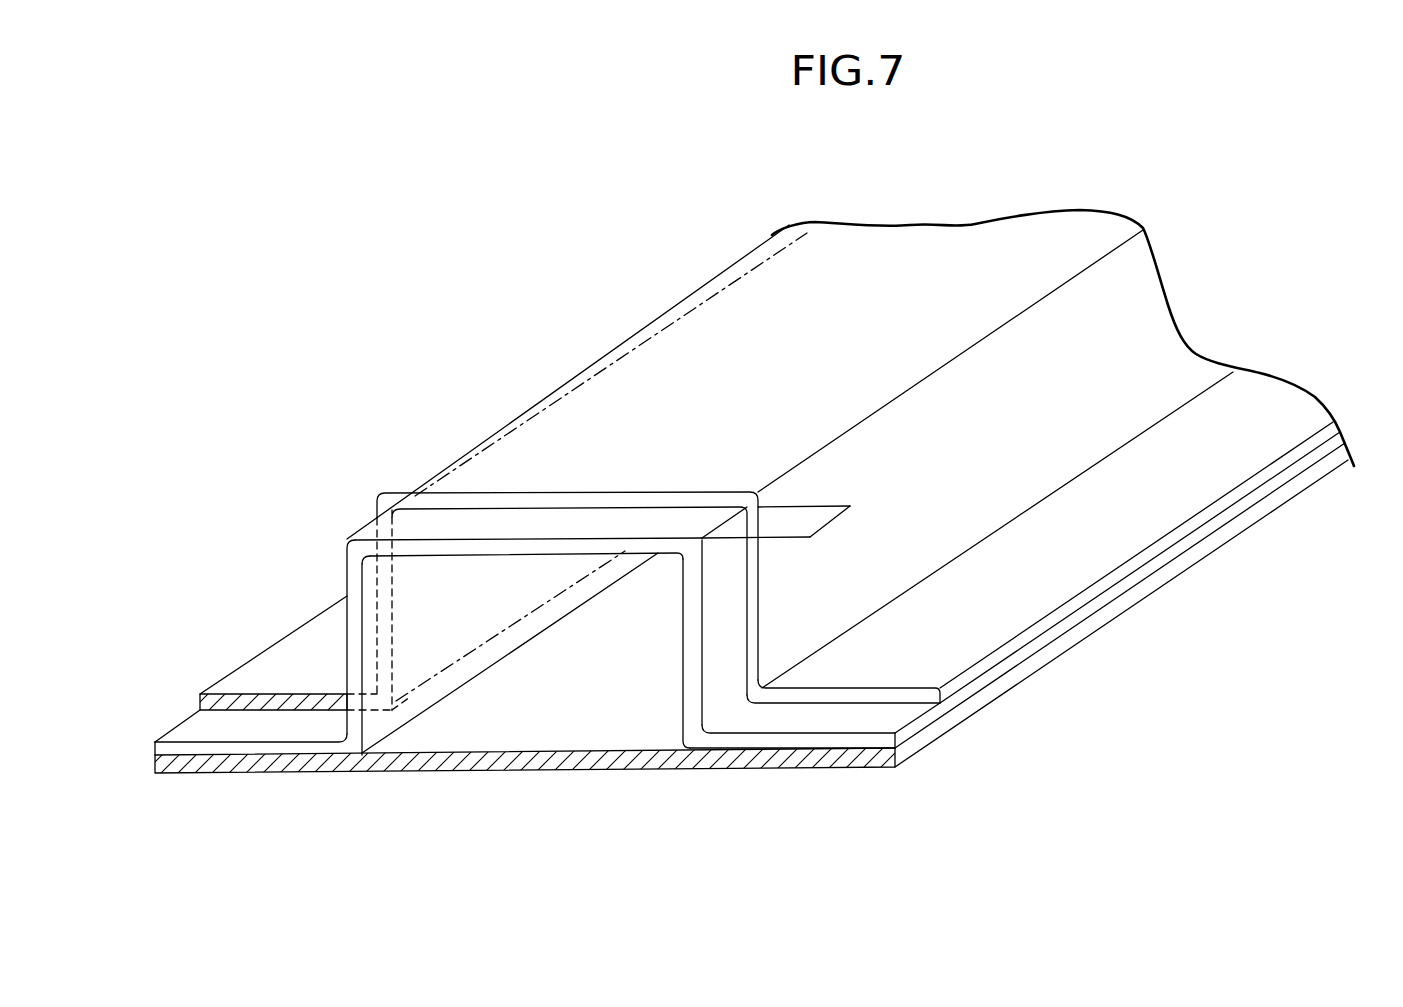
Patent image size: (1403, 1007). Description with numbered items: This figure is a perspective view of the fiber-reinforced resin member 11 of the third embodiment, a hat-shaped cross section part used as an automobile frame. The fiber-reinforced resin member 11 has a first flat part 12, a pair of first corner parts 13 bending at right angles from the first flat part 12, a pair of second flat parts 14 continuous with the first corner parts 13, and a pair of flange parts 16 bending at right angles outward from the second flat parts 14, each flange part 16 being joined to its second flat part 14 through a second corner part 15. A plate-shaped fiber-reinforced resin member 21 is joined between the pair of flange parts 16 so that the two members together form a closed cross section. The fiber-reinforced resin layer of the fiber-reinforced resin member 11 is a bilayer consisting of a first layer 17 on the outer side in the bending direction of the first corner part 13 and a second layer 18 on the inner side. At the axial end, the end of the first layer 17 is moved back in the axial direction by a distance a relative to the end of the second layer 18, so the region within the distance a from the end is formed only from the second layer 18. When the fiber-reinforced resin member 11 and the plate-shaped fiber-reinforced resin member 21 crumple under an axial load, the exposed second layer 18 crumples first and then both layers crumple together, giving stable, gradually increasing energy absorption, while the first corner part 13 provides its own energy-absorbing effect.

The fiber-reinforced resin member 11 is at (604, 298).
The first flat part 12 is at (735, 325).
The first corner part 13 is at (540, 387).
The second flat part 14 is at (1150, 332).
The second corner part 15 is at (418, 714).
The flange part 16 is at (290, 657).
The first layer 17 is at (600, 500).
The second layer 18 is at (578, 542).
The plate-shaped fiber-reinforced resin member 21 is at (570, 776).
The distance a is at (827, 520).